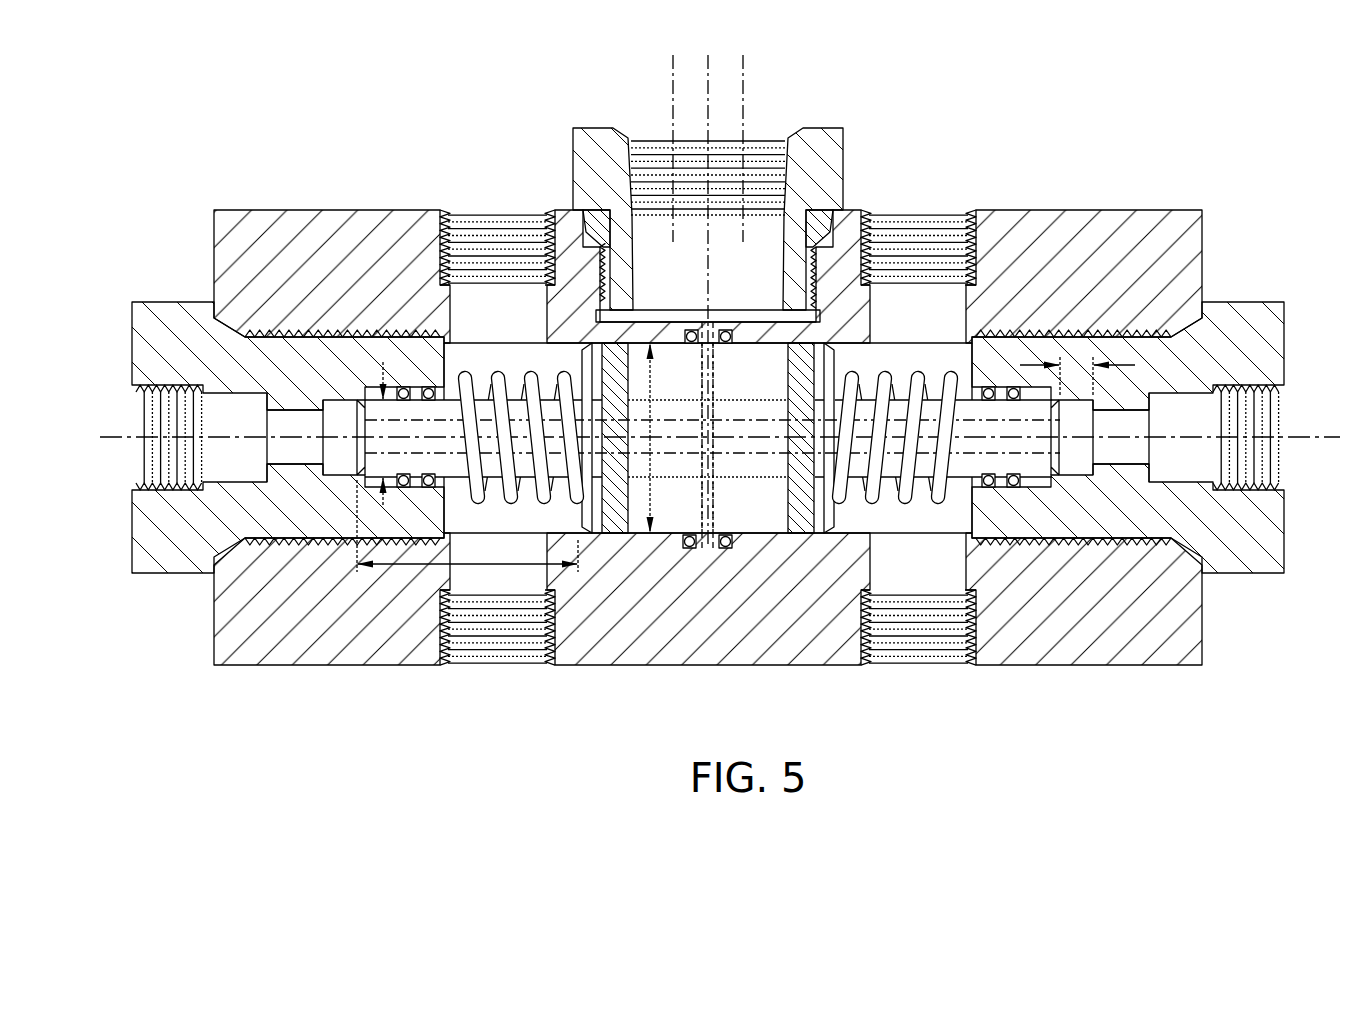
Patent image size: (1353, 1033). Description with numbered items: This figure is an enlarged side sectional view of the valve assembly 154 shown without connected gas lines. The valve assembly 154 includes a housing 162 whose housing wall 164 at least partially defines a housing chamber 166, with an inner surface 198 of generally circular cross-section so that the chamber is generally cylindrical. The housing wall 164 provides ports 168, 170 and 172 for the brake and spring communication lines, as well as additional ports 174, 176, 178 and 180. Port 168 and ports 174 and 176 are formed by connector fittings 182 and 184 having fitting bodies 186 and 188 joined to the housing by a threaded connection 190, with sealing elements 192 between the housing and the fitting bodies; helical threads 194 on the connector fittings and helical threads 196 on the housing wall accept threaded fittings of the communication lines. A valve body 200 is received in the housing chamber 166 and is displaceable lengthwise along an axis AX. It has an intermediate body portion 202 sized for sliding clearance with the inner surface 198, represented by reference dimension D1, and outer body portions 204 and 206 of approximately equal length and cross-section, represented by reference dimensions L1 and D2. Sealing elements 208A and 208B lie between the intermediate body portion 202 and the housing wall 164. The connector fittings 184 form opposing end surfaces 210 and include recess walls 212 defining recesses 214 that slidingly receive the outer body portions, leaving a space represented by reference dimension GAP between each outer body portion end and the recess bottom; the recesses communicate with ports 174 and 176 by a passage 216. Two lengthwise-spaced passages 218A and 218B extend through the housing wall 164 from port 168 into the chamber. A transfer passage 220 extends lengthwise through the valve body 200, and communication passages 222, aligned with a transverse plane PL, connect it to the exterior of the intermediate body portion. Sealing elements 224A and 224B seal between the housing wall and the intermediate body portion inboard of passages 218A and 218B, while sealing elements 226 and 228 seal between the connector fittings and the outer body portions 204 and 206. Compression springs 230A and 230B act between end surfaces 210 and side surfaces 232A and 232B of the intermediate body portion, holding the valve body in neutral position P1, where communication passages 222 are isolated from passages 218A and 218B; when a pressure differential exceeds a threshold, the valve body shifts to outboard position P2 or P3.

The valve assembly 154 is at (293, 150).
The housing 162 is at (248, 208).
The housing wall 164 is at (1190, 245).
The housing chamber 166 is at (898, 353).
The port 168 is at (638, 130).
The port 170 is at (450, 205).
The port 172 is at (918, 207).
The port 174 is at (127, 422).
The port 176 is at (1280, 472).
The port 178 is at (500, 670).
The port 180 is at (900, 675).
The connector fitting 182 is at (593, 123).
The connector fitting 184 is at (165, 300).
The fitting body 186 is at (805, 135).
The fitting body 188 is at (1222, 312).
The threaded connection 190 is at (862, 222).
The sealing elements 192 is at (815, 250).
The helical threads 194 is at (752, 150).
The helical threads 196 is at (523, 215).
The inner surface 198 is at (985, 620).
The valve body 200 is at (660, 536).
The intermediate body portion 202 is at (748, 518).
The outer body portion 204 is at (373, 400).
The outer body portion 206 is at (1083, 478).
The sealing element 208A is at (611, 535).
The sealing element 208B is at (817, 522).
The end surfaces 210 is at (432, 386).
The recess walls 212 is at (303, 425).
The recesses 214 is at (340, 479).
The passage 216 is at (292, 466).
The passage 218A is at (688, 330).
The passage 218B is at (726, 330).
The transfer passage 220 is at (495, 480).
The communication passages 222 is at (715, 405).
The sealing element 224A is at (690, 549).
The sealing element 224B is at (727, 550).
The sealing element 226 is at (524, 372).
The sealing element 228 is at (1010, 386).
The compression spring 230A is at (512, 350).
The compression spring 230B is at (922, 367).
The side surface 232A is at (568, 348).
The side surface 232B is at (855, 515).
The axis AX is at (1292, 440).
The neutral position P1 is at (712, 52).
The outboard position P2 is at (675, 52).
The outboard position P3 is at (747, 52).
The plane PL is at (705, 386).
The reference dimension D1 is at (668, 438).
The reference dimension D2 is at (408, 424).
The reference dimension L1 is at (503, 560).
The gap GAP is at (1135, 365).